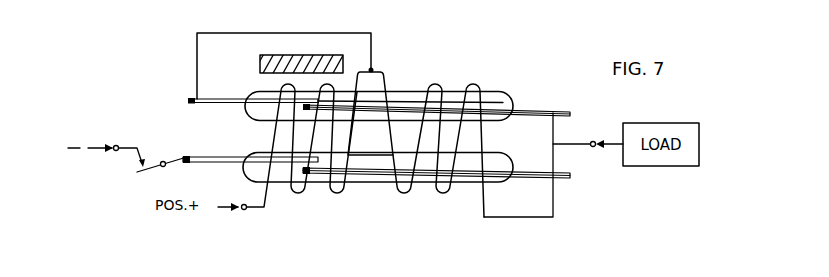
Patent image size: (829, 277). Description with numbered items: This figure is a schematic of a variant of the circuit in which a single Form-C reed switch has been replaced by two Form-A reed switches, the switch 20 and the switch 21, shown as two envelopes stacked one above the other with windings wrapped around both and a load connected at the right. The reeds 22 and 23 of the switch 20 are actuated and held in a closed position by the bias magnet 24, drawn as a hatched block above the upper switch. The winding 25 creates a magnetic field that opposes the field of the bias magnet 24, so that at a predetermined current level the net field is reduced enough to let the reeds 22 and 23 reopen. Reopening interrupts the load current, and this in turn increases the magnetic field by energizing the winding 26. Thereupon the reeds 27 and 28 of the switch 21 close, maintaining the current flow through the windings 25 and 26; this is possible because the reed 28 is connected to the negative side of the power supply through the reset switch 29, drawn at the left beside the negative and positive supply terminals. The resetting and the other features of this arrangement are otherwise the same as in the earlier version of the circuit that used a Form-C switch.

The Form-A switch 20 is at (520, 94).
The Form-A switch 21 is at (518, 145).
The reed 22 is at (559, 111).
The reed 23 is at (188, 99).
The bias magnet 24 is at (257, 62).
The winding 25 is at (365, 154).
The winding 26 is at (443, 194).
The reed 27 is at (560, 177).
The reed 28 is at (205, 155).
The reset switch 29 is at (164, 160).